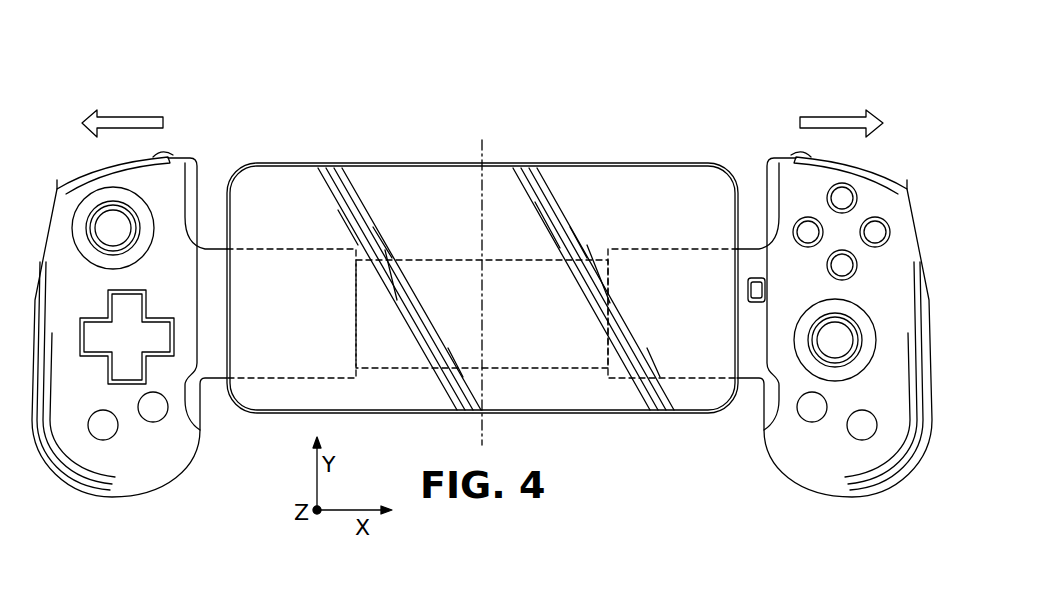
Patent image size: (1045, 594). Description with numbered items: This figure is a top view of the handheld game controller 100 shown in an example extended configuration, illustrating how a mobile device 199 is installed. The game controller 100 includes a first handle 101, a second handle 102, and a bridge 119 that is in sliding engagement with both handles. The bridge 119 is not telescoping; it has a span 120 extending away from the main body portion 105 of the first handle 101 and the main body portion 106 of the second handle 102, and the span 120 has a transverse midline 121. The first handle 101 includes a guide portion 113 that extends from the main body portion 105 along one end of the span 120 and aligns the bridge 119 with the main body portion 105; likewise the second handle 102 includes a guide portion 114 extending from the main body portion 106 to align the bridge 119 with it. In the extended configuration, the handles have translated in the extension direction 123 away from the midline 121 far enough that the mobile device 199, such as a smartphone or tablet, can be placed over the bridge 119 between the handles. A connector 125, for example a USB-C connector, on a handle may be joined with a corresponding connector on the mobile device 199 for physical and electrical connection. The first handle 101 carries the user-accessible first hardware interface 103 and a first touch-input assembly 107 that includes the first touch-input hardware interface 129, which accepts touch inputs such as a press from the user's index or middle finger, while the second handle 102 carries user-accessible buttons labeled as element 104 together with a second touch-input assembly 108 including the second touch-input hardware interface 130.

The game controller 100 is at (375, 103).
The first handle 101 is at (177, 497).
The second handle 102 is at (787, 497).
The first hardware interface 103 is at (165, 325).
The action buttons 104 is at (890, 225).
The main body portion 105 is at (110, 498).
The main body portion 106 is at (849, 498).
The first touch-input assembly 107 is at (78, 160).
The second touch-input assembly 108 is at (890, 160).
The guide portion 113 is at (300, 249).
The guide portion 114 is at (650, 249).
The bridge 119 is at (455, 260).
The span 120 is at (422, 202).
The transverse midline 121 is at (482, 137).
The extension direction 123 is at (133, 110).
The connector 125 is at (748, 290).
The first touch-input hardware interface 129 is at (156, 153).
The second touch-input hardware interface 130 is at (805, 153).
The mobile device 199 is at (592, 163).